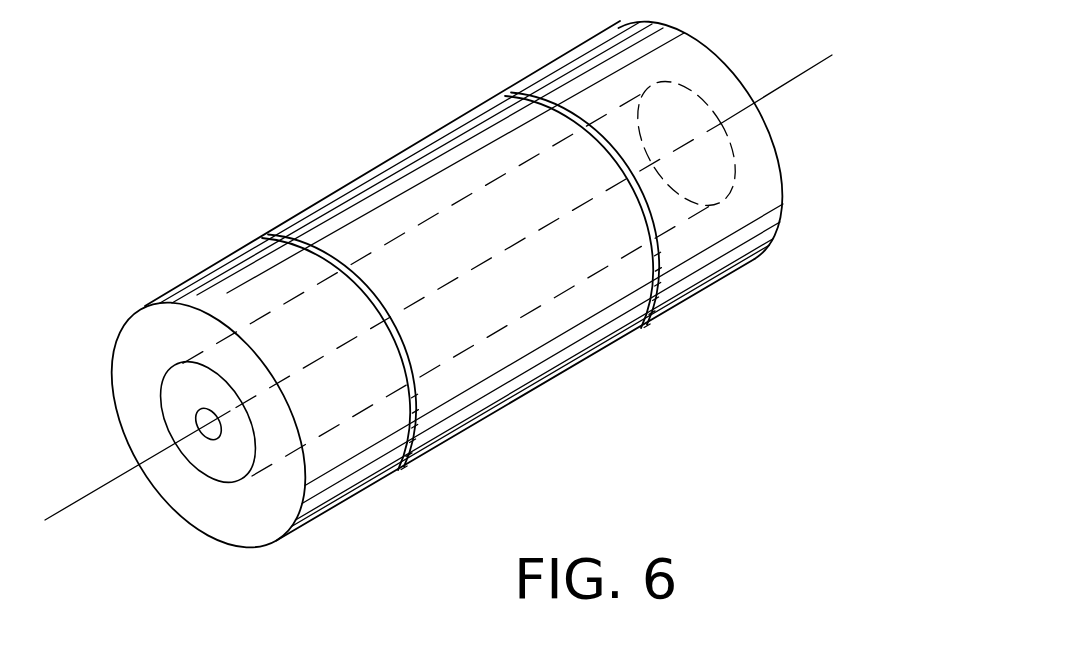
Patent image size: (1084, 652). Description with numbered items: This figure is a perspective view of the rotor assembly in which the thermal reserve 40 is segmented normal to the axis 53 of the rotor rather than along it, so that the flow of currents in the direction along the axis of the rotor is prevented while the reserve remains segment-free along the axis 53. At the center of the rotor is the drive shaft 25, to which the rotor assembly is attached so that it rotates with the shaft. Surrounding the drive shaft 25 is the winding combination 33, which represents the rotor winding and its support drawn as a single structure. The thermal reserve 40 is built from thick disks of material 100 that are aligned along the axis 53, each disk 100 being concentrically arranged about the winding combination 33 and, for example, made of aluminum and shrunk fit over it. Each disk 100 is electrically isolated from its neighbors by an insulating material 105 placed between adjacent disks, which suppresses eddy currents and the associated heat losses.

The drive shaft 25 is at (197, 421).
The rotor winding combination 33 is at (212, 468).
The thermal reserve 40 is at (245, 533).
The axis 53 is at (73, 505).
The thick disk of material 100 is at (592, 302).
The insulating material 105 is at (413, 424).